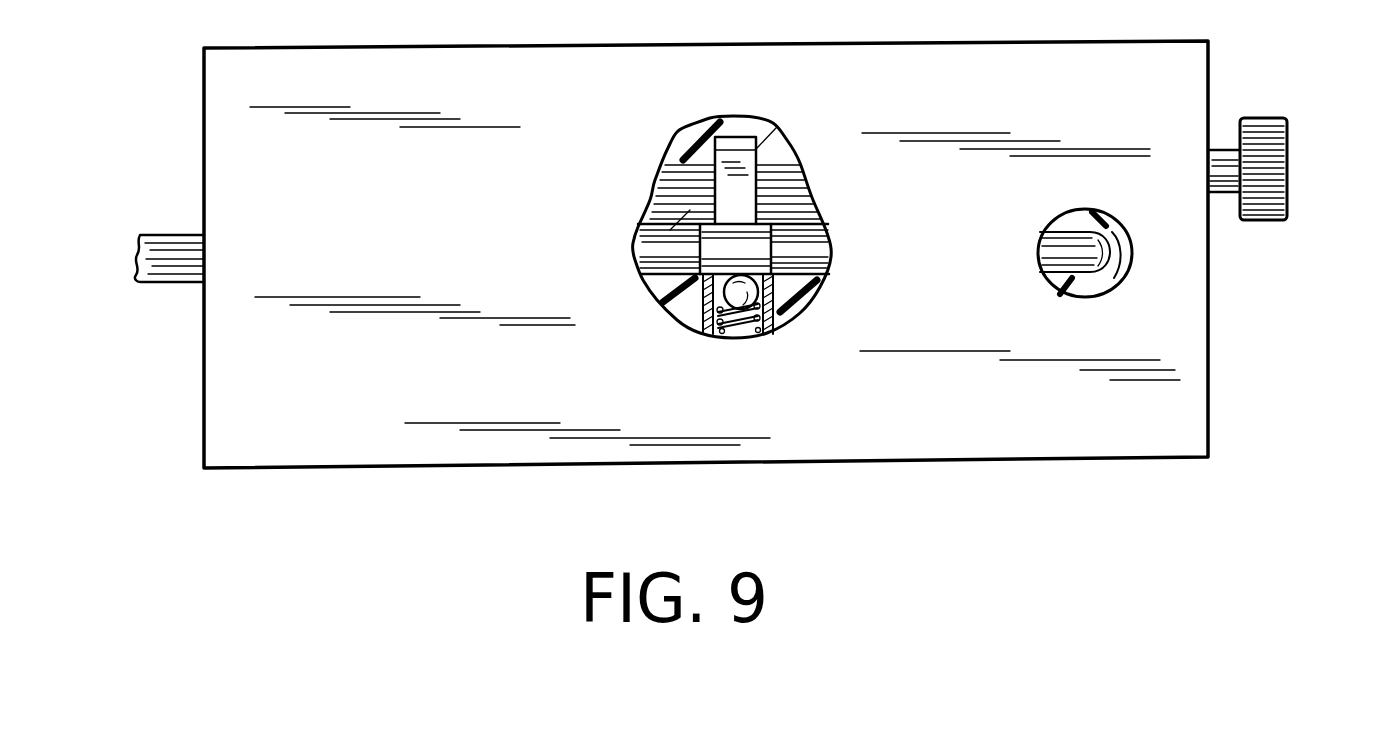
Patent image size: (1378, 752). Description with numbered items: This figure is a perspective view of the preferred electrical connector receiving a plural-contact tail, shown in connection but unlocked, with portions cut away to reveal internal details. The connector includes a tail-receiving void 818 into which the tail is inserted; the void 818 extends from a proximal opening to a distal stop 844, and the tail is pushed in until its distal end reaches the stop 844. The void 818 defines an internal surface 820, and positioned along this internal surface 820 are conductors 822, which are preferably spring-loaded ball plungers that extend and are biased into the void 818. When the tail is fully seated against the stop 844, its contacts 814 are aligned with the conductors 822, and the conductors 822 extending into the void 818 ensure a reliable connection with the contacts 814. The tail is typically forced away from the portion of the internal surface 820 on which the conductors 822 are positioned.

The contacts 814 is at (757, 238).
The tail-receiving void 818 is at (653, 282).
The internal surface 820 is at (700, 282).
The conductors 822 is at (805, 285).
The distal stop 844 is at (1130, 268).